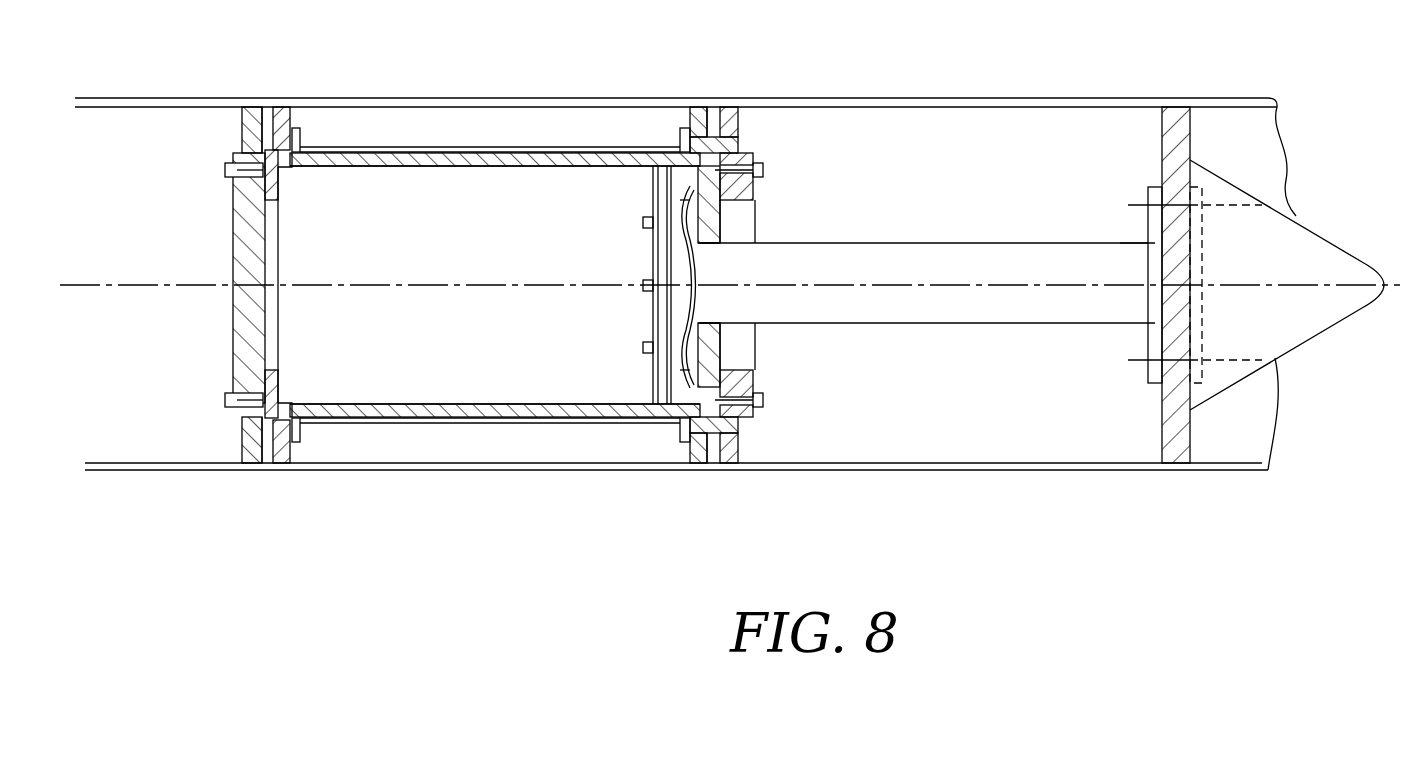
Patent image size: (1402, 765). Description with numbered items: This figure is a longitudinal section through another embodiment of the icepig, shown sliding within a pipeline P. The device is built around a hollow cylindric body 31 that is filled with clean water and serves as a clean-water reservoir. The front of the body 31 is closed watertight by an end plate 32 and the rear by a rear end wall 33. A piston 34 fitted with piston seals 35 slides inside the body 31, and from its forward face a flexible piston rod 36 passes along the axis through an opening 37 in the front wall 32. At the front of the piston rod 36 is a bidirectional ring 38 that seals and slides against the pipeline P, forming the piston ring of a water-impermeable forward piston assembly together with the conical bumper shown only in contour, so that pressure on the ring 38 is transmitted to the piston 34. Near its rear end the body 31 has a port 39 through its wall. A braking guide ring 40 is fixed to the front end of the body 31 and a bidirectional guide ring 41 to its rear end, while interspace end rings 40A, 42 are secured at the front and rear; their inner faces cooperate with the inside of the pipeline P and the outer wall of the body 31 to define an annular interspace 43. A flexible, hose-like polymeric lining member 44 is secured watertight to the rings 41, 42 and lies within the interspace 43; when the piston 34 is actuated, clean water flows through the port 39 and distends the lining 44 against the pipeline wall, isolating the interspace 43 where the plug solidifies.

The pipeline P is at (100, 103).
The body 31 is at (530, 172).
The end plate 32 is at (730, 222).
The rear end wall 33 is at (266, 314).
The piston 34 is at (652, 204).
The piston seals 35 is at (660, 184).
The flexible piston rod 36 is at (806, 254).
The opening 37 is at (700, 246).
The bidirectional ring 38 is at (1168, 110).
The port 39 is at (292, 406).
The braking guide ring 40 is at (725, 110).
The interspace end ring 40A is at (697, 112).
The bidirectional guide ring 41 is at (250, 122).
The interspace end ring 42 is at (292, 113).
The annular interspace 43 is at (491, 276).
The lining member 44 is at (393, 150).